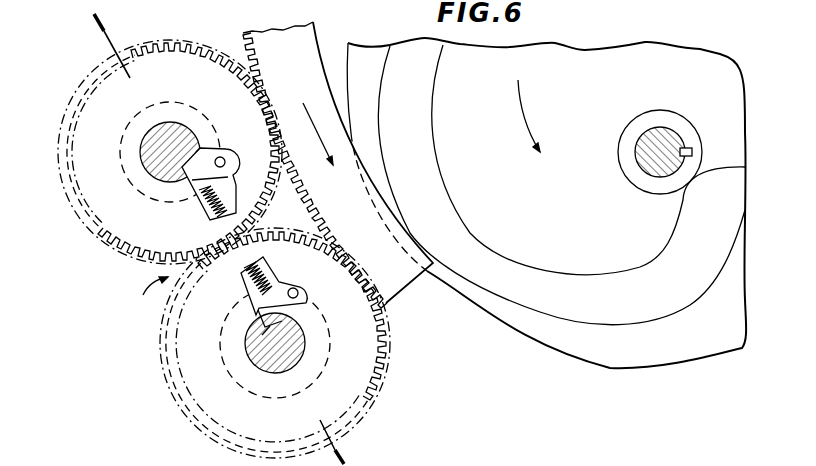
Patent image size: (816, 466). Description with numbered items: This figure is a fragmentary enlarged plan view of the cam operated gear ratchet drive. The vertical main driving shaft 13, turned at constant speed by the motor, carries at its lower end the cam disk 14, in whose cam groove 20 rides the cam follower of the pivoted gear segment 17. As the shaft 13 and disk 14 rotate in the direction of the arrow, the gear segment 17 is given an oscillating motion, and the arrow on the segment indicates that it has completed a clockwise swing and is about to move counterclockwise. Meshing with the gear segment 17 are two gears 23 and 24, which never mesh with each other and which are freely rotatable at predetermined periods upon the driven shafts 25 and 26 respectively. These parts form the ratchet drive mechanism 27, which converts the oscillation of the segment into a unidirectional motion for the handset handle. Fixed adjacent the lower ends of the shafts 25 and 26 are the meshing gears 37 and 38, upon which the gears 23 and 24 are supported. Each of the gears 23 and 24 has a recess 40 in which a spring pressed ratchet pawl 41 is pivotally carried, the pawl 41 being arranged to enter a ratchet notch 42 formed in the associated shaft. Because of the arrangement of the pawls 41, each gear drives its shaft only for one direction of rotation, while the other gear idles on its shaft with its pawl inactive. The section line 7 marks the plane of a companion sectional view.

The section line 7- 7 is at (99, 28).
The main driving shaft 13 is at (655, 132).
The cam disk 14 is at (632, 357).
The gear segment 17 is at (277, 38).
The cam groove 20 is at (562, 310).
The gear 23 is at (103, 105).
The gear 24 is at (380, 362).
The driven shaft 25 is at (165, 130).
The driven shaft 26 is at (298, 362).
The ratchet drive mechanism 27 is at (151, 295).
The gear 37 is at (63, 136).
The gear 38 is at (167, 348).
The recess 40 is at (230, 193).
The spring pressed ratchet pawl 41 is at (197, 182).
The ratchet notch 42 is at (205, 155).